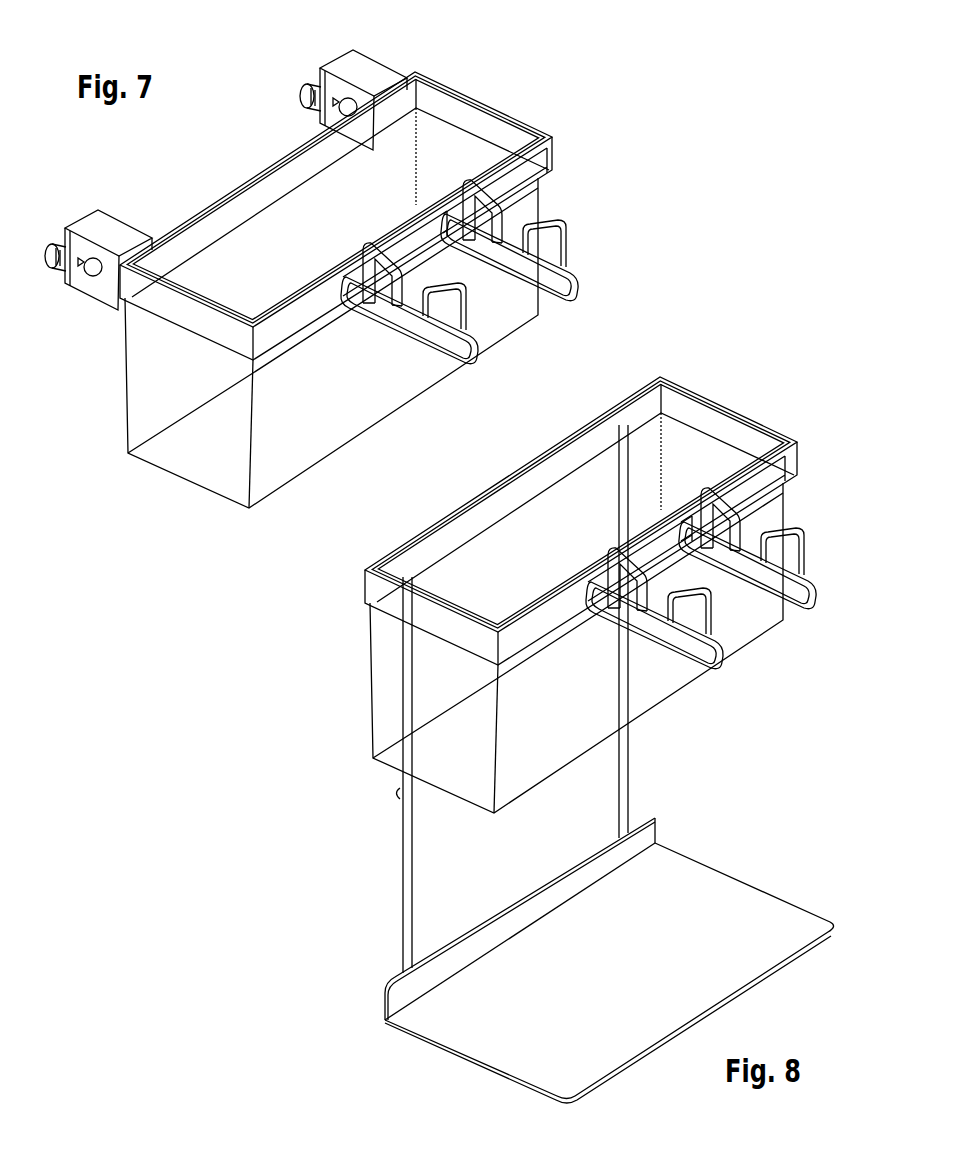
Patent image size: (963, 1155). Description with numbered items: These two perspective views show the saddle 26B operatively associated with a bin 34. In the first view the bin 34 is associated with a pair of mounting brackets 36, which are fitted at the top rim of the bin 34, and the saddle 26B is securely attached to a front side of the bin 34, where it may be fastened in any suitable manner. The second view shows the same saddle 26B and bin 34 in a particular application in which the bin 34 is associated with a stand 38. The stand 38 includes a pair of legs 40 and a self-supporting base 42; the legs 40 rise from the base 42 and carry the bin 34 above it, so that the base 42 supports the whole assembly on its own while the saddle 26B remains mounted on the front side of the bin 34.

In FIG. 7, the saddle 26B is at (567, 225).
In FIG. 8, the saddle 26B is at (731, 562).
In FIG. 7, the bin 34 is at (118, 340).
In FIG. 8, the bin 34 is at (533, 595).
In FIG. 7, the mounting brackets 36 is at (100, 223).
In FIG. 8, the stand 38 is at (567, 764).
In FIG. 8, the legs 40 is at (407, 907).
In FIG. 8, the self-supporting base 42 is at (713, 883).